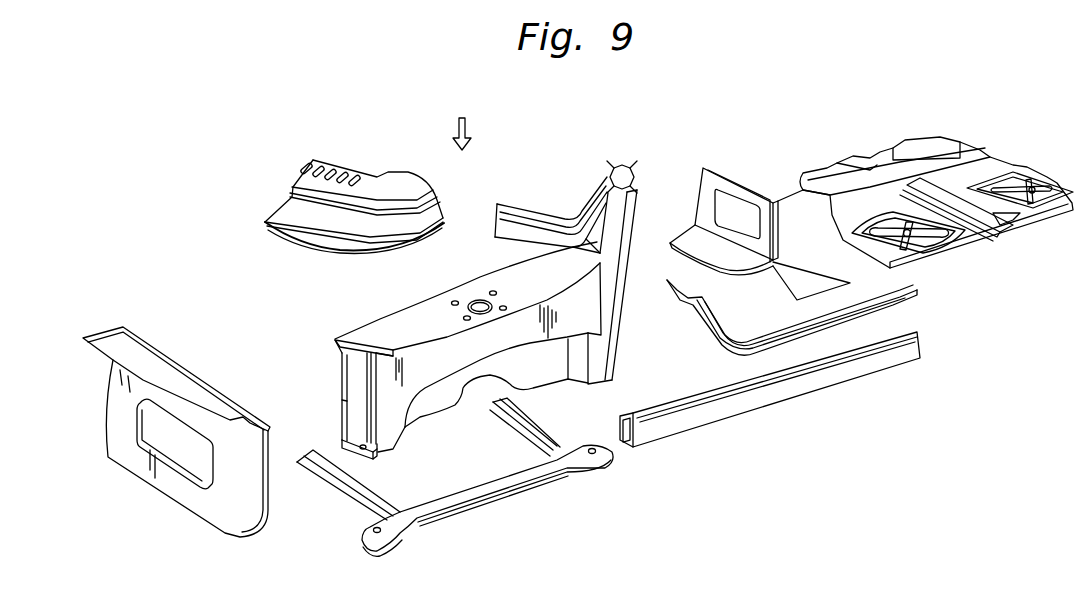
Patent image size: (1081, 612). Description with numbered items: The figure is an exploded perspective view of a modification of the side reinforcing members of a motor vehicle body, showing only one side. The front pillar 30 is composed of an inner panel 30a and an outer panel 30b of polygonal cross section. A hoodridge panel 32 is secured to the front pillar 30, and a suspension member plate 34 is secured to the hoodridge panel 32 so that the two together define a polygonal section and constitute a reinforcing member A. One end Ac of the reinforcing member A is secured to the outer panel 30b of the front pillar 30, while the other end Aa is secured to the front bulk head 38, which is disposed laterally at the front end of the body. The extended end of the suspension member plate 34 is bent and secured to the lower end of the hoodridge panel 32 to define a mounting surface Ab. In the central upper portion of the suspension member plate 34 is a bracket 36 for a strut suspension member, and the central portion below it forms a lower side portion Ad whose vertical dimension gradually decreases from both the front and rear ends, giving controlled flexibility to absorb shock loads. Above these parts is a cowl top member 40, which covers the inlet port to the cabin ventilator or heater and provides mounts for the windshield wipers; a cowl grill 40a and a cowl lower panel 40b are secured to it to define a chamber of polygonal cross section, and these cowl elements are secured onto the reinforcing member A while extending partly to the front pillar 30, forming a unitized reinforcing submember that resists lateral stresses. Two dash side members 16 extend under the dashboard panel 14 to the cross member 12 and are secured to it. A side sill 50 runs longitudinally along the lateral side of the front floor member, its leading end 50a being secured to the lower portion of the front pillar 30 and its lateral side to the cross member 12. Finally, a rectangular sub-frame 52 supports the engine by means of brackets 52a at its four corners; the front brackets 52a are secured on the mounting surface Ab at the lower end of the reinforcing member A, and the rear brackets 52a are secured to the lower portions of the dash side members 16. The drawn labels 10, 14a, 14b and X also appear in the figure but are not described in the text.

The floor panel 10 is at (927, 146).
The cross member 12 is at (1003, 230).
The dashboard panel 14 is at (735, 267).
The vertical plate of side bracket 14a is at (735, 177).
The inclined flange of side bracket 14b is at (803, 263).
The dash side member 16 is at (690, 323).
The front pillar 30 is at (615, 168).
The inner panel 30a is at (637, 165).
The outer panel 30b is at (634, 196).
The hoodridge panel 32 is at (352, 370).
The suspension member plate 34 is at (383, 350).
The bracket 36 is at (478, 297).
The front bulk head 38 is at (265, 505).
The cowl top member 40 is at (378, 172).
The cowl grill 40a is at (333, 170).
The cowl lower panel 40b is at (377, 240).
The side sill 50 is at (720, 417).
The leading end 50a is at (623, 443).
The sub-frame 52 is at (473, 487).
The bracket 52a is at (387, 533).
The reinforcing member A is at (347, 306).
The other end of reinforcing member Aa is at (342, 402).
The mounting surface Ab is at (368, 458).
The one end of reinforcing member Ac is at (605, 250).
The lower side portion Ad is at (528, 343).
The viewing direction X is at (462, 121).